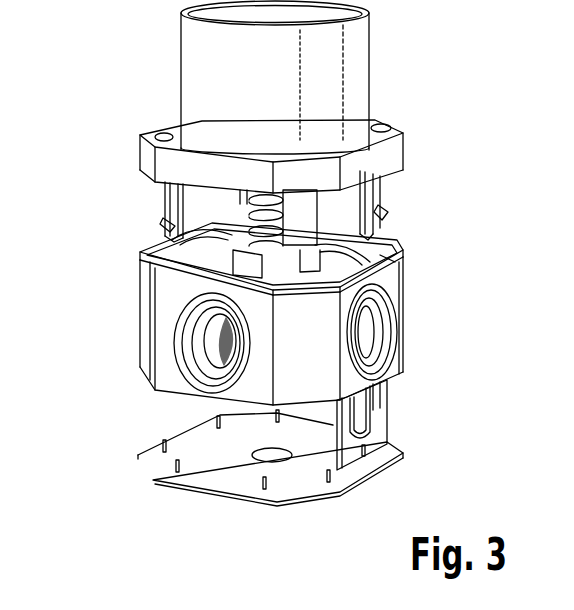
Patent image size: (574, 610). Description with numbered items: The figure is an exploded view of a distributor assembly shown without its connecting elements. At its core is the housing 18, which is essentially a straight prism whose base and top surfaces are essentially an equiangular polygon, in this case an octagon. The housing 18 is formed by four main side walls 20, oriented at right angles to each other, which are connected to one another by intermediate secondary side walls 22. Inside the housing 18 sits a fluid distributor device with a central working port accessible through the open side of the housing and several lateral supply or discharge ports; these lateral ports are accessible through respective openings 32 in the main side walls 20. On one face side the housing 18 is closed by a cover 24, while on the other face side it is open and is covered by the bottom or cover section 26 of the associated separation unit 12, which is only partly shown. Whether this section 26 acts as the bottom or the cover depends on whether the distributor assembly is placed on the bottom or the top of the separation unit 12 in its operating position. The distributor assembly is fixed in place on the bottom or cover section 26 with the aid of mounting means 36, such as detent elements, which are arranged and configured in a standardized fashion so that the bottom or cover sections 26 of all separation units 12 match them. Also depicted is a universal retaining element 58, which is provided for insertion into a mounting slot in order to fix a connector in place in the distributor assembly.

The separation unit 12 is at (194, 71).
The bottom or cover section 26 is at (150, 162).
The mounting means 36 is at (155, 217).
The housing 18 is at (117, 257).
The secondary side walls 22 is at (143, 303).
The main side walls 20 is at (167, 387).
The openings 32 is at (168, 345).
The cover 24 is at (185, 435).
The universal retaining element 58 is at (380, 422).